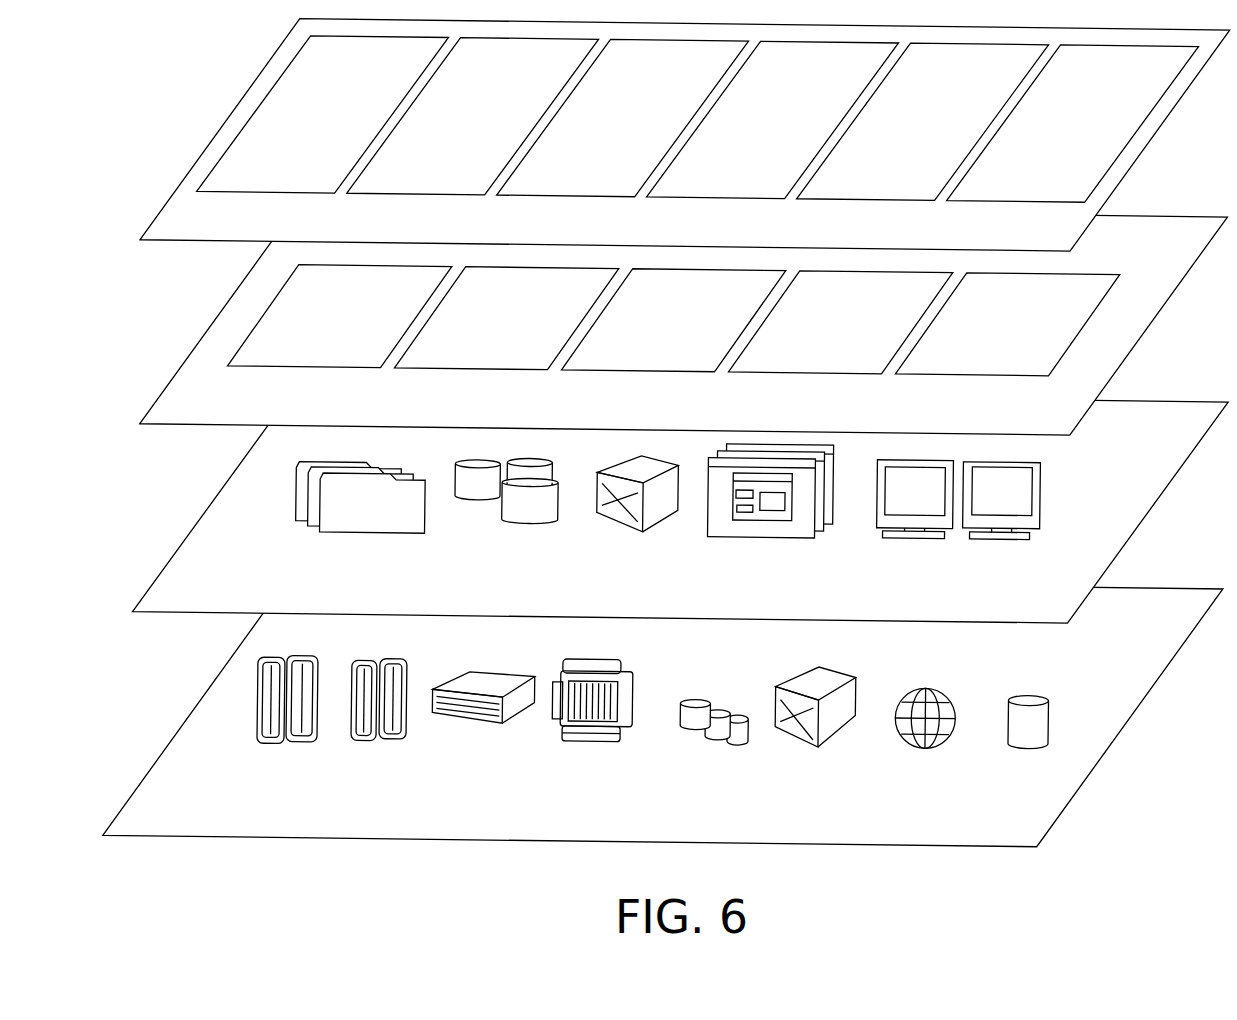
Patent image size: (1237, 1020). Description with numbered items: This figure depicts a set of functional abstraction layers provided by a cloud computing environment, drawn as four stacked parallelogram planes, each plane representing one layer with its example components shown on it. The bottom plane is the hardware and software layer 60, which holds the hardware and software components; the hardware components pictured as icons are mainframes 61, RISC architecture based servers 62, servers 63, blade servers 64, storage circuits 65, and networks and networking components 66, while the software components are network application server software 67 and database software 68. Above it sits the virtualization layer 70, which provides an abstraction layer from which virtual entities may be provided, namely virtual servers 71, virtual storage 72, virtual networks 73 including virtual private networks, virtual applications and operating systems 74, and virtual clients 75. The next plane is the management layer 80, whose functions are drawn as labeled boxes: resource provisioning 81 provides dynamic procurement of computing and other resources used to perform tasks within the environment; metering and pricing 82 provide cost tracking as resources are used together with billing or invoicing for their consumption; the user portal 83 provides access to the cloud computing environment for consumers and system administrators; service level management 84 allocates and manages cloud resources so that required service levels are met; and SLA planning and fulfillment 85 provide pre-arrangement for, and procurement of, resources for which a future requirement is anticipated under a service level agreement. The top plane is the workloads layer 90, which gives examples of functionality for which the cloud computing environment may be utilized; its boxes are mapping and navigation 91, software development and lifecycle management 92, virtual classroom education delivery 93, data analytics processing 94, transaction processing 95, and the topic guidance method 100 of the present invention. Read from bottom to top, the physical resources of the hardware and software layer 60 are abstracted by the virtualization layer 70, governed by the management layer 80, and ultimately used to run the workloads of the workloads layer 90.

The hardware and software layer 60 is at (199, 835).
The mainframes 61 is at (287, 722).
The RISC architecture based servers 62 is at (378, 723).
The servers 63 is at (483, 718).
The blade servers 64 is at (592, 725).
The storage circuits 65 is at (713, 746).
The networks and networking components 66 is at (815, 730).
The network application server software 67 is at (924, 743).
The database software 68 is at (1027, 745).
The virtualization layer 70 is at (201, 612).
The virtual servers 71 is at (360, 519).
The virtual storage 72 is at (506, 517).
The virtual networks 73 is at (637, 515).
The virtual applications and operating systems 74 is at (770, 513).
The virtual clients 75 is at (958, 521).
The management layer 80 is at (200, 424).
The resource provisioning 81 is at (340, 316).
The metering and pricing 82 is at (507, 318).
The user portal 83 is at (674, 320).
The service level management 84 is at (841, 322).
The SLA planning and fulfillment 85 is at (1007, 324).
The workloads layer 90 is at (200, 240).
The mapping and navigation 91 is at (323, 114).
The software development and lifecycle management 92 is at (473, 116).
The virtual classroom education delivery 93 is at (623, 118).
The data analytics processing 94 is at (773, 120).
The transaction processing 95 is at (923, 122).
The topic guidance method 100 is at (1073, 124).